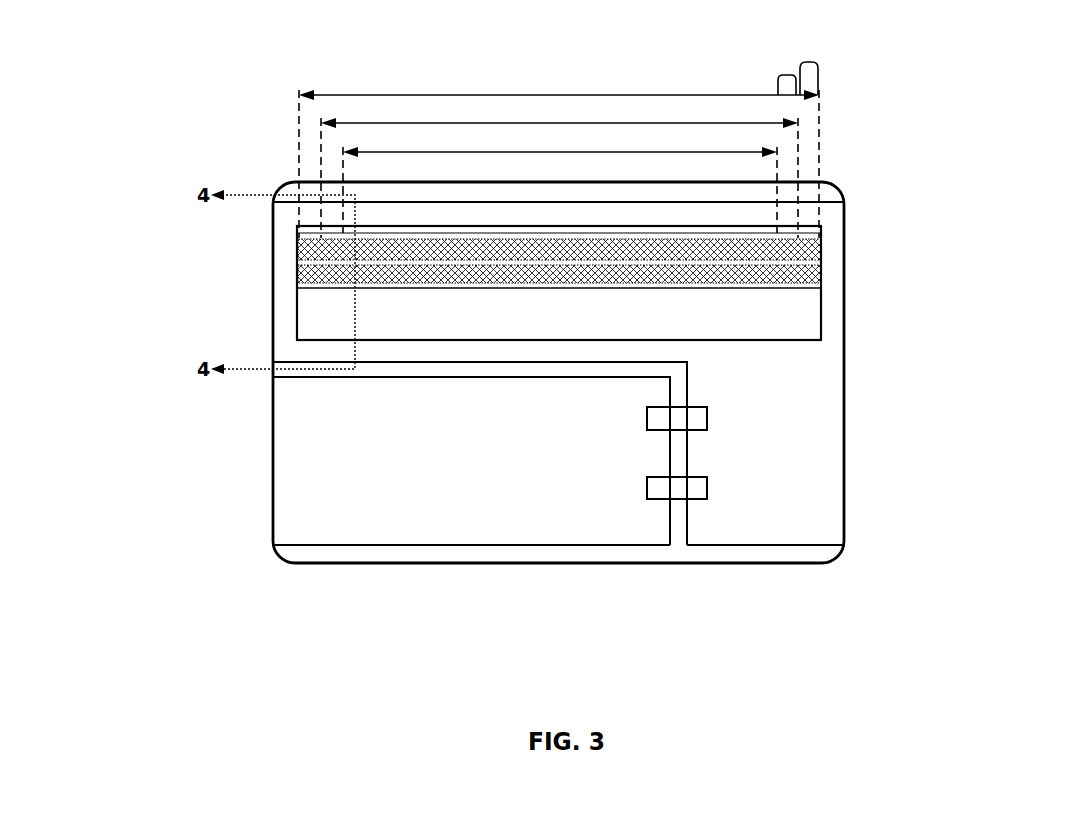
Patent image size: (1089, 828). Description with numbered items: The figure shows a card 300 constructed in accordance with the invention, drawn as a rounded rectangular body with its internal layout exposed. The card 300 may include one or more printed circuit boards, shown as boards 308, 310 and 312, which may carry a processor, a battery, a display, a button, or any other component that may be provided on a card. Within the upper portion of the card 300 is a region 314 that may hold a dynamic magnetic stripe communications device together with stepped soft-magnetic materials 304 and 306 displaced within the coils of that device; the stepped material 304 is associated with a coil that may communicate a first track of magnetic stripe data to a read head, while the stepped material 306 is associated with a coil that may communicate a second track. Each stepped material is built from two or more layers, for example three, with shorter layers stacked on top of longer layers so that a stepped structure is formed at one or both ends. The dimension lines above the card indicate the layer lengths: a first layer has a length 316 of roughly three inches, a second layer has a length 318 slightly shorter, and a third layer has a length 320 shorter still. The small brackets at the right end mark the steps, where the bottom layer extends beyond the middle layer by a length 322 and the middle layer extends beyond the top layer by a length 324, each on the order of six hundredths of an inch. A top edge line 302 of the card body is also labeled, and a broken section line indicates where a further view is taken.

The card 300 is at (1063, 388).
The card body top edge 302 is at (511, 182).
The stepped material 304 is at (297, 248).
The stepped material 306 is at (297, 275).
The printed circuit board 308 is at (844, 458).
The printed circuit board 310 is at (282, 440).
The printed circuit board 312 is at (528, 228).
The region 314 is at (558, 288).
The length 316 is at (698, 95).
The length 318 is at (668, 123).
The length 320 is at (616, 152).
The length 322 is at (809, 62).
The length 324 is at (787, 75).